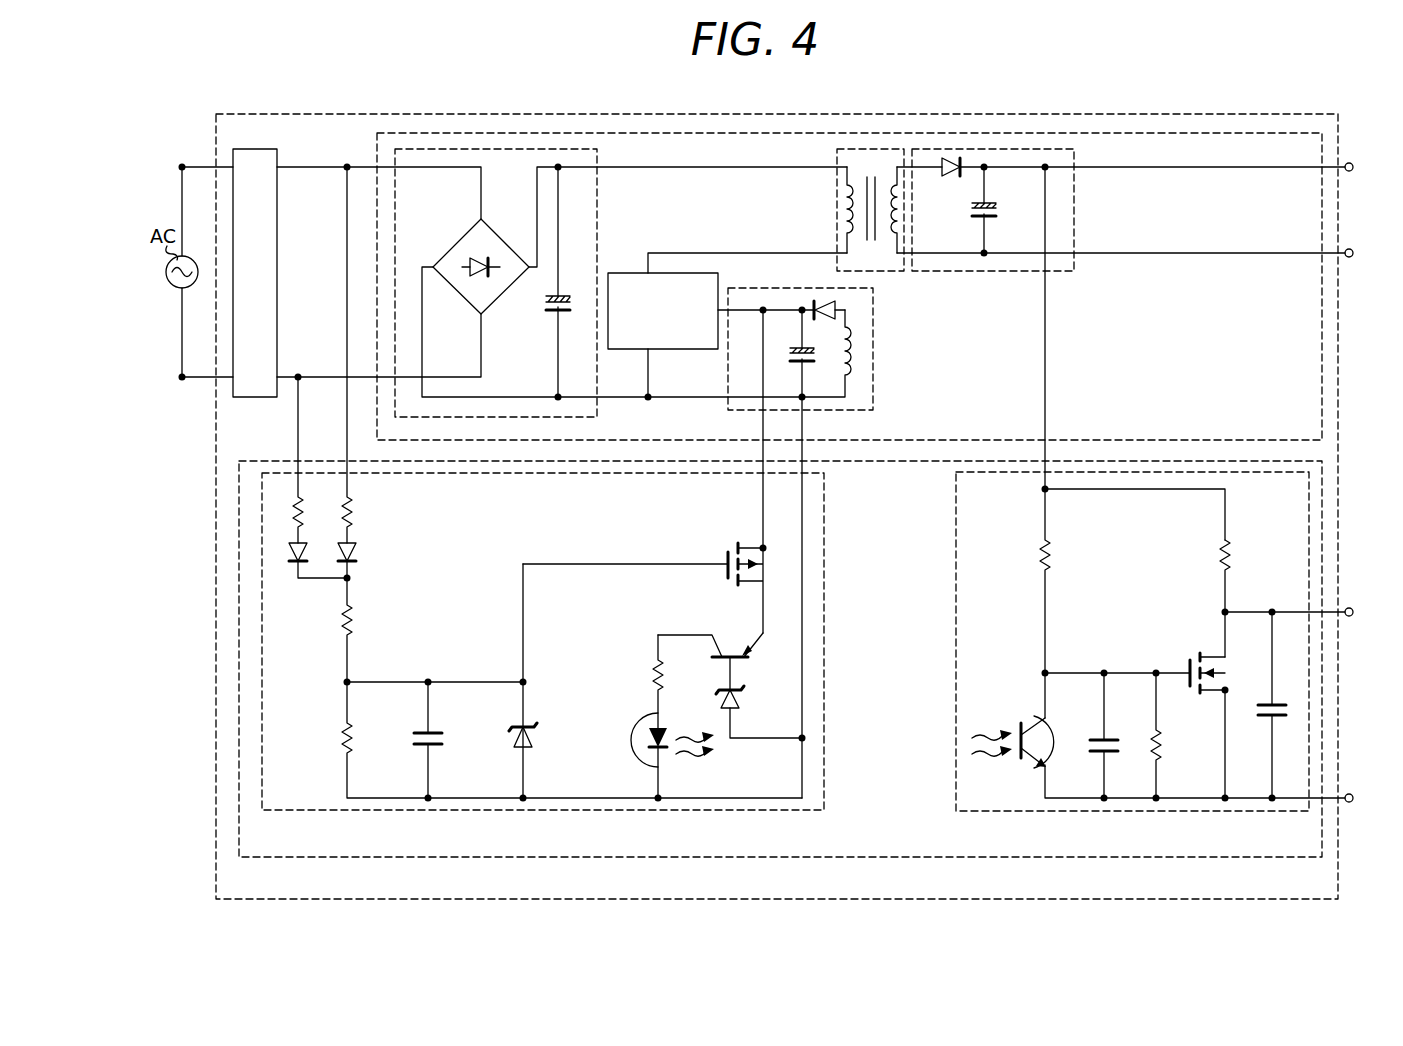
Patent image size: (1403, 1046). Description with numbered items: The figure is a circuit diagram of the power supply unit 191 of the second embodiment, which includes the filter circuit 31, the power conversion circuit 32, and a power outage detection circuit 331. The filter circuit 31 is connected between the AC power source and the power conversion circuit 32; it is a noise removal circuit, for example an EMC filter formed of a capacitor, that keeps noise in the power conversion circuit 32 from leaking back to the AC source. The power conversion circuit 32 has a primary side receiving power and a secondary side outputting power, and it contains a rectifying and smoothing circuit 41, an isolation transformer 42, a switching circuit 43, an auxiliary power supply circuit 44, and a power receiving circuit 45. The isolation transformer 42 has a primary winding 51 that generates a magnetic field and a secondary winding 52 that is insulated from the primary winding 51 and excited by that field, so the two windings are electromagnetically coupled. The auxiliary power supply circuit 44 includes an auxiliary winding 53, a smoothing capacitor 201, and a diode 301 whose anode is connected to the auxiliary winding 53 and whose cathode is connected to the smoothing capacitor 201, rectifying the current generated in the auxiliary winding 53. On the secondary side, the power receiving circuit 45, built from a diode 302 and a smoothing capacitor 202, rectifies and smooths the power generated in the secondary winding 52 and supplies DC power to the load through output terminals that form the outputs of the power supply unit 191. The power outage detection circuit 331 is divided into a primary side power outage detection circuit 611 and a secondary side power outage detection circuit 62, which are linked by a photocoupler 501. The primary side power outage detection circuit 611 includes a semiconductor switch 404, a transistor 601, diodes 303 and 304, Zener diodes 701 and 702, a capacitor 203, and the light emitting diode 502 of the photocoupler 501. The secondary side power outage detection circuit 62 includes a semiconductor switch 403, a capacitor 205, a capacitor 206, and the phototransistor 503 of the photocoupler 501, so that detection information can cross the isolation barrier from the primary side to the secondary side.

The filter circuit 31 is at (255, 149).
The power supply unit 191 is at (318, 114).
The power conversion circuit 32 is at (610, 133).
The rectifying and smoothing circuit 41 is at (512, 148).
The switching circuit 43 is at (630, 273).
The isolation transformer 42 is at (873, 170).
The primary winding 51 is at (844, 212).
The secondary winding 52 is at (900, 210).
The power receiving circuit 45 is at (1121, 170).
The diode 302 is at (954, 158).
The smoothing capacitor 202 is at (990, 208).
The auxiliary power supply circuit 44 is at (842, 333).
The diode 301 is at (828, 301).
The auxiliary winding 53 is at (856, 343).
The smoothing capacitor 201 is at (794, 348).
The power outage detection circuit 331 is at (238, 550).
The primary side power outage detection circuit 611 is at (262, 722).
The diode 303 is at (352, 548).
The diode 304 is at (300, 558).
The capacitor 203 is at (437, 733).
The Zener diode 701 is at (533, 742).
The semiconductor switch 404 is at (732, 558).
The transistor 601 is at (715, 662).
The Zener diode 702 is at (741, 702).
The photocoupler 501 is at (848, 740).
The light emitting diode 502 is at (668, 752).
The phototransistor 503 is at (1018, 725).
The secondary side power outage detection circuit 62 is at (1122, 641).
The capacitor 205 is at (1115, 740).
The semiconductor switch 403 is at (1190, 669).
The capacitor 206 is at (1284, 705).